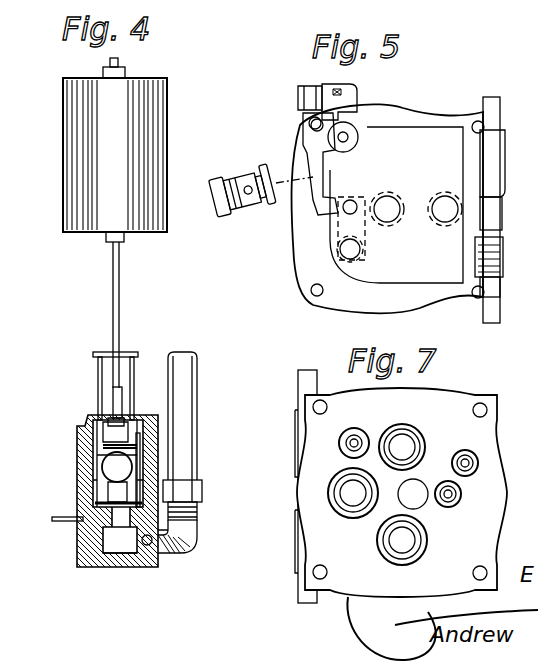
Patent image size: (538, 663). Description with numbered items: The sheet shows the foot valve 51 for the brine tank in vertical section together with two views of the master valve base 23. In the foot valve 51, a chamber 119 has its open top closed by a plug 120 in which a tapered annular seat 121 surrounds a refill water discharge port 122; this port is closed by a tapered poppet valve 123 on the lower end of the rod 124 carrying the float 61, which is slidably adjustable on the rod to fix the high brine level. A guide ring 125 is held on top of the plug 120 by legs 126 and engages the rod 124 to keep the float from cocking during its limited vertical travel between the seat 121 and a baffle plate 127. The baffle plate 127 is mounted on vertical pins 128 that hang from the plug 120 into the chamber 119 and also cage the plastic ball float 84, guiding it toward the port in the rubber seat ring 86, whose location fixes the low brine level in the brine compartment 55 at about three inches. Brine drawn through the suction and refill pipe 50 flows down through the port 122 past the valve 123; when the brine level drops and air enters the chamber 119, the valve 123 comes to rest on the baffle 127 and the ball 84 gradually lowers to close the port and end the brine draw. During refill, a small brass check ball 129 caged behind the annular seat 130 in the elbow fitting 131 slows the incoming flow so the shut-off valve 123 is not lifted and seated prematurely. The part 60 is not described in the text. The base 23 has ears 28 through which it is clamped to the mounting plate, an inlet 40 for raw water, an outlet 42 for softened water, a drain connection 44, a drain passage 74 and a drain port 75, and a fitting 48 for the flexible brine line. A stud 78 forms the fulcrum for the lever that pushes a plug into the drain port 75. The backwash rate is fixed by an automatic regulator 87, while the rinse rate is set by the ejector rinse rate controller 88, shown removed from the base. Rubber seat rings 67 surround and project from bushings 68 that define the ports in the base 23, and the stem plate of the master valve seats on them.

In FIG. 4, the float 61 is at (75, 191).
In FIG. 4, the float rod 124 is at (121, 268).
In FIG. 4, the guide ring 125 is at (113, 352).
In FIG. 4, the legs 126 is at (134, 372).
In FIG. 4, the suction and refill pipe 50 is at (197, 372).
In FIG. 4, the refill water discharge port 122 is at (108, 418).
In FIG. 4, the tapered annular seat 121 is at (130, 418).
In FIG. 4, the plug 120 is at (155, 422).
In FIG. 4, the foot valve 51 is at (77, 428).
In FIG. 4, the tapered poppet valve 123 is at (97, 445).
In FIG. 4, the vertical pins 128 is at (140, 447).
In FIG. 4, the baffle plate 127 is at (105, 456).
In FIG. 4, the plastic ball float 84 is at (140, 462).
In FIG. 4, the chamber 119 is at (93, 487).
In FIG. 4, the brine compartment 55 is at (121, 480).
In FIG. 4, the rubber seat ring 86 is at (93, 503).
In FIG. 4, the lever 60 is at (58, 522).
In FIG. 4, the elbow fitting 131 is at (197, 547).
In FIG. 4, the brass check ball 129 is at (150, 560).
In FIG. 4, the annular seat 130 is at (120, 567).
In FIG. 5, the master valve base 23 is at (405, 112).
In FIG. 7, the master valve base 23 is at (365, 400).
In FIG. 5, the inlet 40 is at (387, 196).
In FIG. 5, the outlet 42 is at (445, 196).
In FIG. 5, the drain port 75 is at (350, 200).
In FIG. 7, the drain port 75 is at (462, 494).
In FIG. 5, the drain connection 44 is at (361, 250).
In FIG. 5, the drain passage 74 is at (338, 228).
In FIG. 5, the fitting 48 is at (337, 95).
In FIG. 5, the stud 78 is at (358, 134).
In FIG. 5, the ejector rinse rate controller 88 is at (225, 212).
In FIG. 5, the ears 28 is at (489, 97).
In FIG. 7, the ears 28 is at (307, 370).
In FIG. 5, the automatic regulator 87 is at (503, 257).
In FIG. 7, the rubber seat rings 67 is at (395, 428).
In FIG. 7, the bushings 68 is at (420, 434).